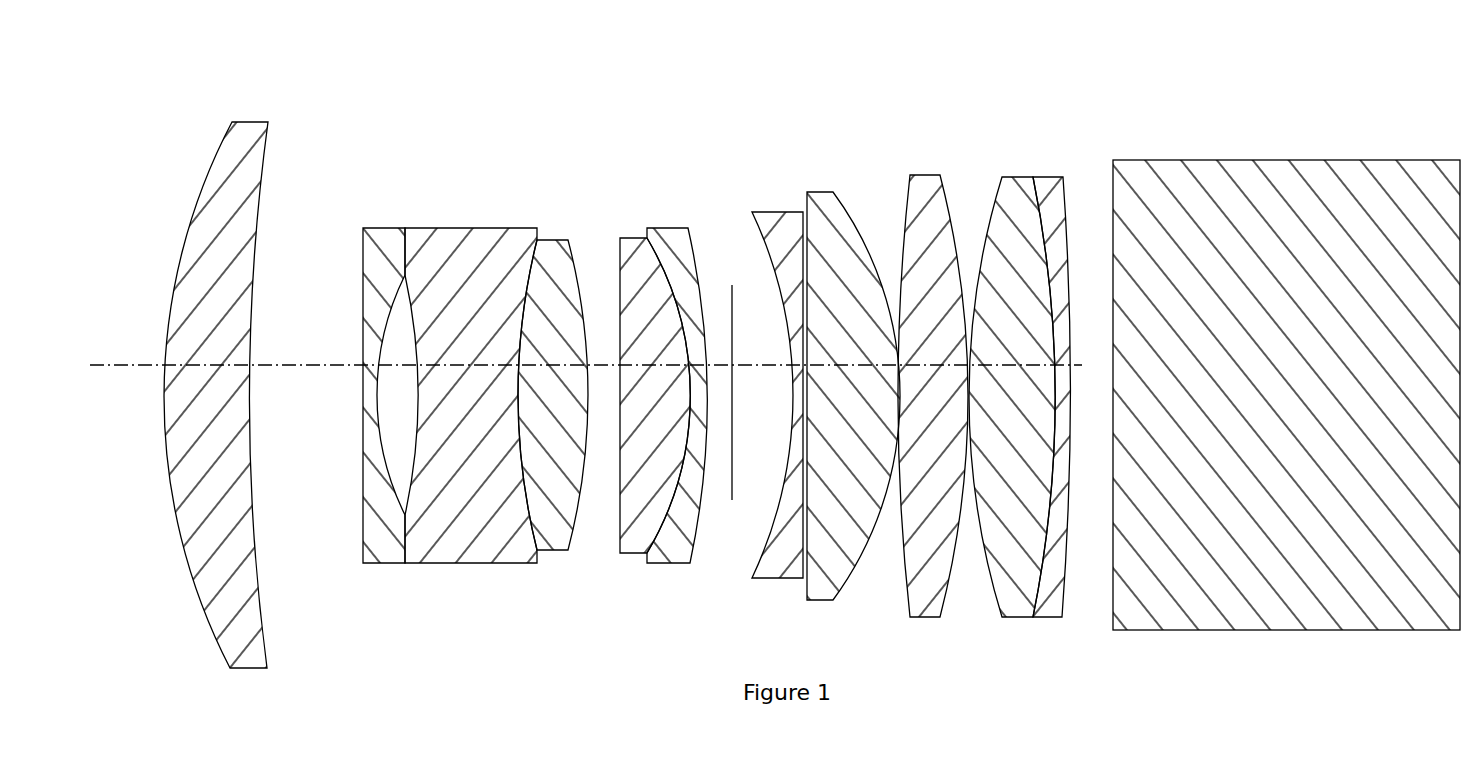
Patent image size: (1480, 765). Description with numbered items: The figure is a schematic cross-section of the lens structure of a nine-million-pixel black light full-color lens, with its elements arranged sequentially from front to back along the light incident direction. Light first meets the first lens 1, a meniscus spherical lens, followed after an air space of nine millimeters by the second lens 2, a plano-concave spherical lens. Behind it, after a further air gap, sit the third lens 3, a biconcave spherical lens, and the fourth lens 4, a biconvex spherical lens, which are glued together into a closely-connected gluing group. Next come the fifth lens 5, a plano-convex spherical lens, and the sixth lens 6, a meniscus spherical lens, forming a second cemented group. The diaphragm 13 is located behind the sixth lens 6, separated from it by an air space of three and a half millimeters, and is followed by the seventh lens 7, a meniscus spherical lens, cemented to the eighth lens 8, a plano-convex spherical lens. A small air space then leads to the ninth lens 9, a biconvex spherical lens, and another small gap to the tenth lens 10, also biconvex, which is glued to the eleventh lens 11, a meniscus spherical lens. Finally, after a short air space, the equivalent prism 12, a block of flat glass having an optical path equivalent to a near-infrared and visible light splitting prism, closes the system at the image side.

The first lens 1 is at (225, 197).
The second lens 2 is at (392, 247).
The third lens 3 is at (478, 257).
The fourth lens 4 is at (558, 273).
The fifth lens 5 is at (643, 268).
The sixth lens 6 is at (678, 273).
The seventh lens 7 is at (785, 232).
The eighth lens 8 is at (830, 243).
The ninth lens 9 is at (922, 233).
The tenth lens 10 is at (1005, 237).
The eleventh lens 11 is at (1053, 217).
The equivalent prism 12 is at (1248, 225).
The diaphragm 13 is at (733, 307).